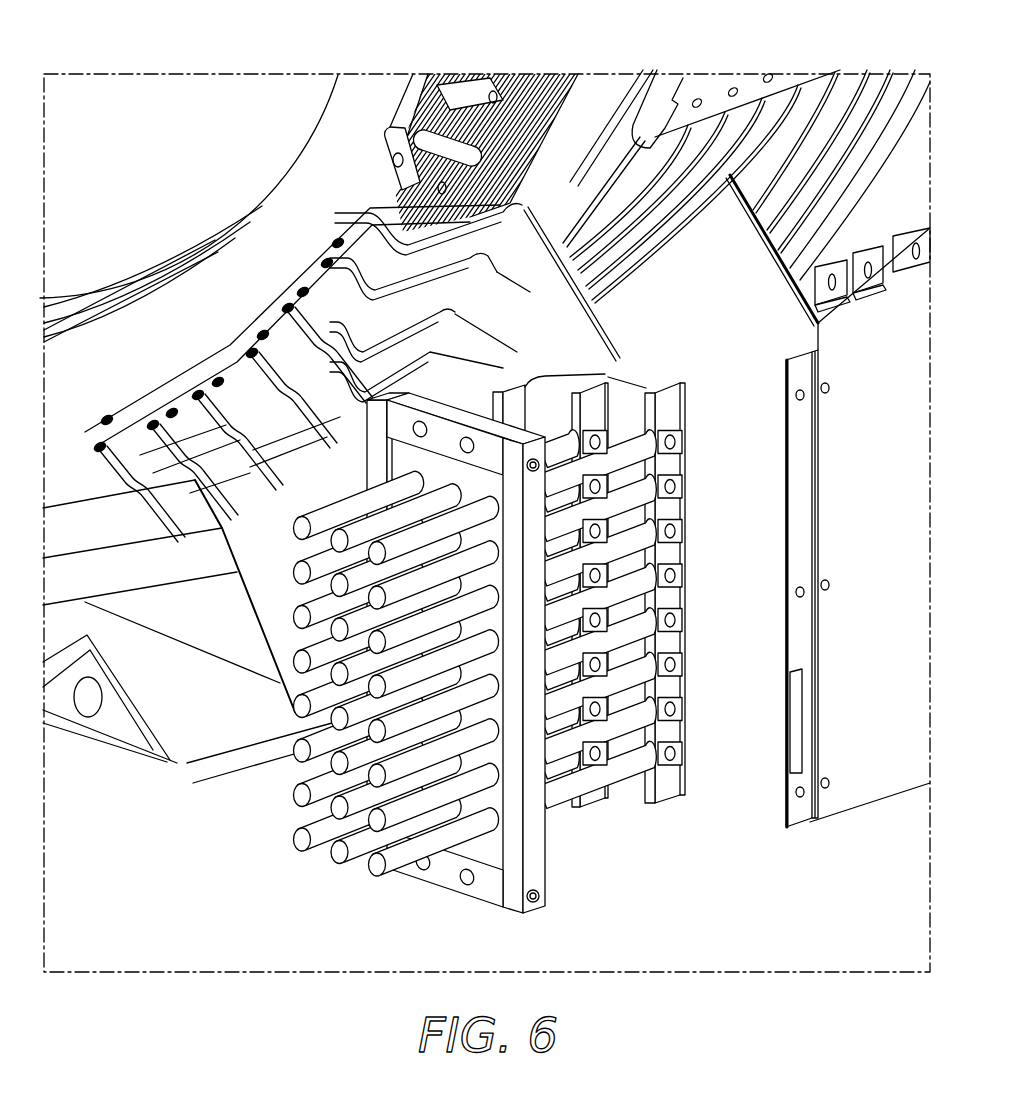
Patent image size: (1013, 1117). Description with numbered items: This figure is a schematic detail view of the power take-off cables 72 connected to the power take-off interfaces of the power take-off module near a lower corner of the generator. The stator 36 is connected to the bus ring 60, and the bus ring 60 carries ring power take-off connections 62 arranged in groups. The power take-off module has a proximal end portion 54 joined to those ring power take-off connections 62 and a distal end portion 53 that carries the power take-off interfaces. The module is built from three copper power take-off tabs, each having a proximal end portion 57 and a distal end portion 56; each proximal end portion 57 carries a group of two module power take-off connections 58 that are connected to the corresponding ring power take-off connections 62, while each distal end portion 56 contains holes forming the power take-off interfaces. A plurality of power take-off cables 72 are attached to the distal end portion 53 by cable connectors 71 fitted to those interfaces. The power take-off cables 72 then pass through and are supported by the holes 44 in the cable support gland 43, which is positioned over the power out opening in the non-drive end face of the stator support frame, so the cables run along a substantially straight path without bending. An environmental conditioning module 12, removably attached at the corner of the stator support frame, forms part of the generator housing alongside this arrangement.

The environmental conditioning module 12 is at (867, 792).
The stator 36 is at (617, 88).
The cable support gland 43 is at (540, 865).
The holes 44 is at (492, 837).
The distal end portion 53 is at (690, 366).
The proximal end portion 54 is at (480, 237).
The distal end portion 56 is at (537, 375).
The proximal end portion 57 is at (223, 532).
The module power take-off connections 58 is at (318, 232).
The bus ring 60 is at (372, 90).
The ring power take-off connections 62 is at (330, 222).
The cable connectors 71 is at (660, 765).
The power take-off cables 72 is at (402, 862).